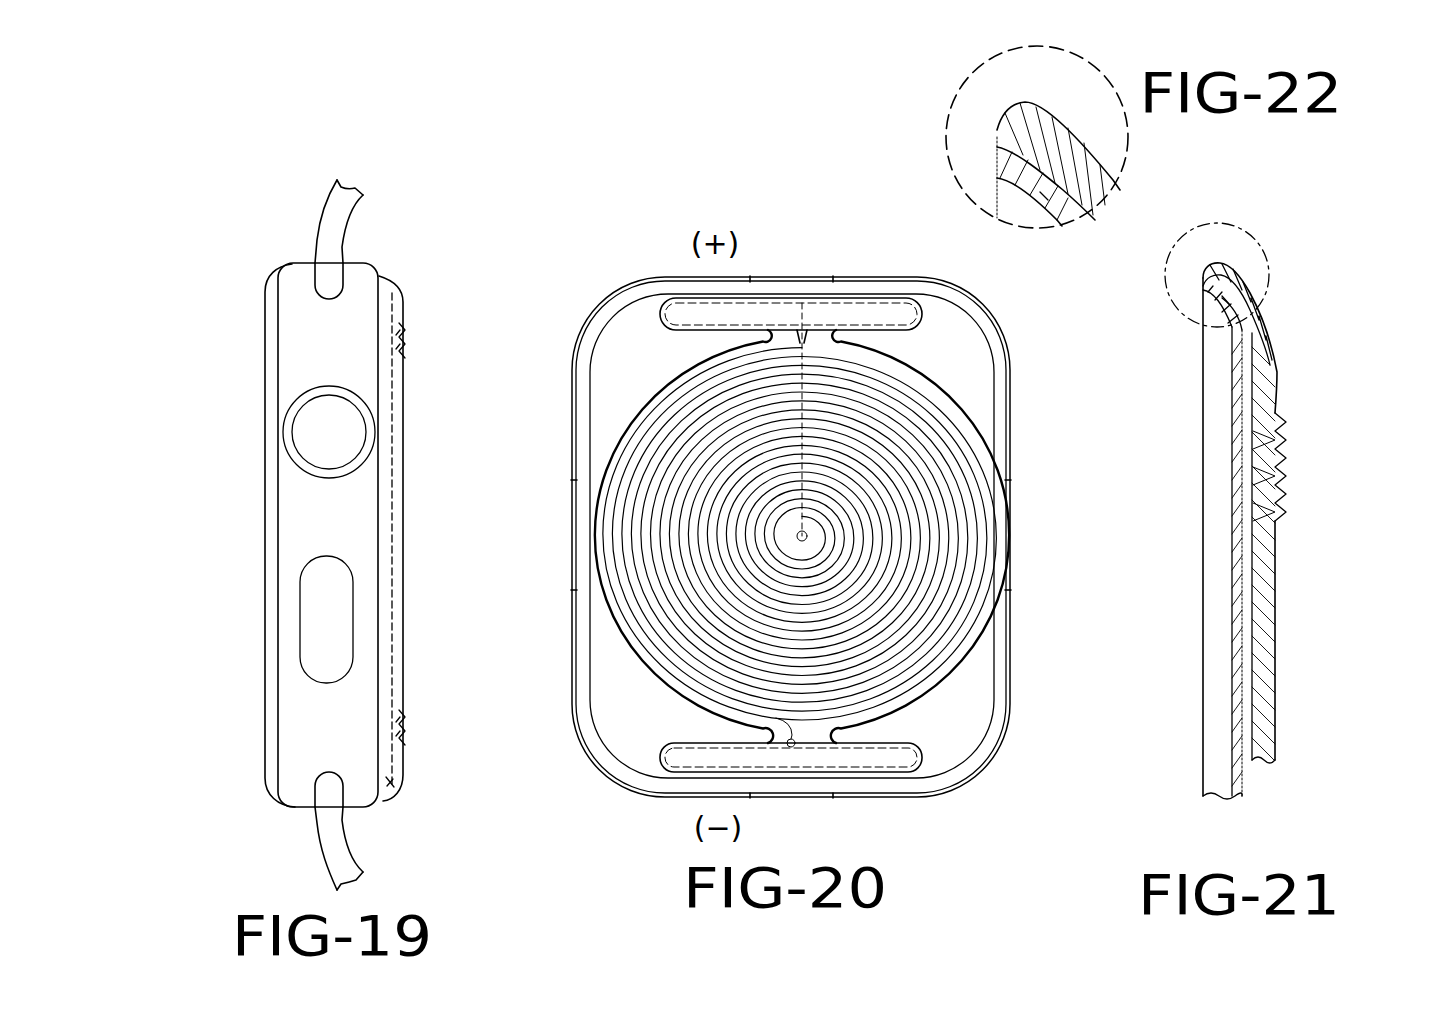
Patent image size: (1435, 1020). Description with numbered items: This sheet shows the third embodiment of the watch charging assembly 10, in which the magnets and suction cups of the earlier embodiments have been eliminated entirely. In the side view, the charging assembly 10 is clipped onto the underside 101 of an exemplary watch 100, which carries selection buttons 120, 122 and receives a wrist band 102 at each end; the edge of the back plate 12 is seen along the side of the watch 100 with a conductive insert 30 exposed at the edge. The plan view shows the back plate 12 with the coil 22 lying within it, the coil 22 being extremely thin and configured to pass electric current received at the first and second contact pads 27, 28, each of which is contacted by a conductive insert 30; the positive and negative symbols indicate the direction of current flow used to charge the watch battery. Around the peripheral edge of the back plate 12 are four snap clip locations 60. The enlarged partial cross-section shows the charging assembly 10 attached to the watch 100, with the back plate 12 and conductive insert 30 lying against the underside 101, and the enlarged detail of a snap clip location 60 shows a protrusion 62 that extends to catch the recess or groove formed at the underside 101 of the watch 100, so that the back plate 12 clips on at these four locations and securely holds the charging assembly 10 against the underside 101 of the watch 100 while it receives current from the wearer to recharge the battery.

In FIG. 19, the charging assembly 10 is at (401, 455).
In FIG. 20, the charging assembly 10 is at (1006, 450).
In FIG. 21, the charging assembly 10 is at (1275, 340).
In FIG. 19, the back plate 12 is at (403, 655).
In FIG. 20, the back plate 12 is at (612, 318).
In FIG. 21, the back plate 12 is at (1280, 652).
In FIG. 21, the coil 22 is at (1268, 262).
In FIG. 20, the first contact pad 27 is at (860, 313).
In FIG. 20, the second contact pad 28 is at (902, 757).
In FIG. 19, the conductive insert 30 is at (403, 334).
In FIG. 21, the conductive insert 30 is at (1281, 445).
In FIG. 20, the snap clip location 60 is at (790, 278).
In FIG. 21, the snap clip location 60 is at (1222, 265).
In FIG. 22, the snap clip location 60 is at (1037, 110).
In FIG. 21, the protrusion 62 is at (1205, 280).
In FIG. 22, the protrusion 62 is at (1000, 142).
In FIG. 19, the watch 100 is at (264, 322).
In FIG. 19, the underside 101 is at (400, 788).
In FIG. 21, the underside 101 is at (1228, 303).
In FIG. 22, the underside 101 is at (1043, 198).
In FIG. 19, the wrist band 102 is at (330, 237).
In FIG. 19, the selection button 120 is at (327, 433).
In FIG. 19, the selection button 122 is at (324, 608).